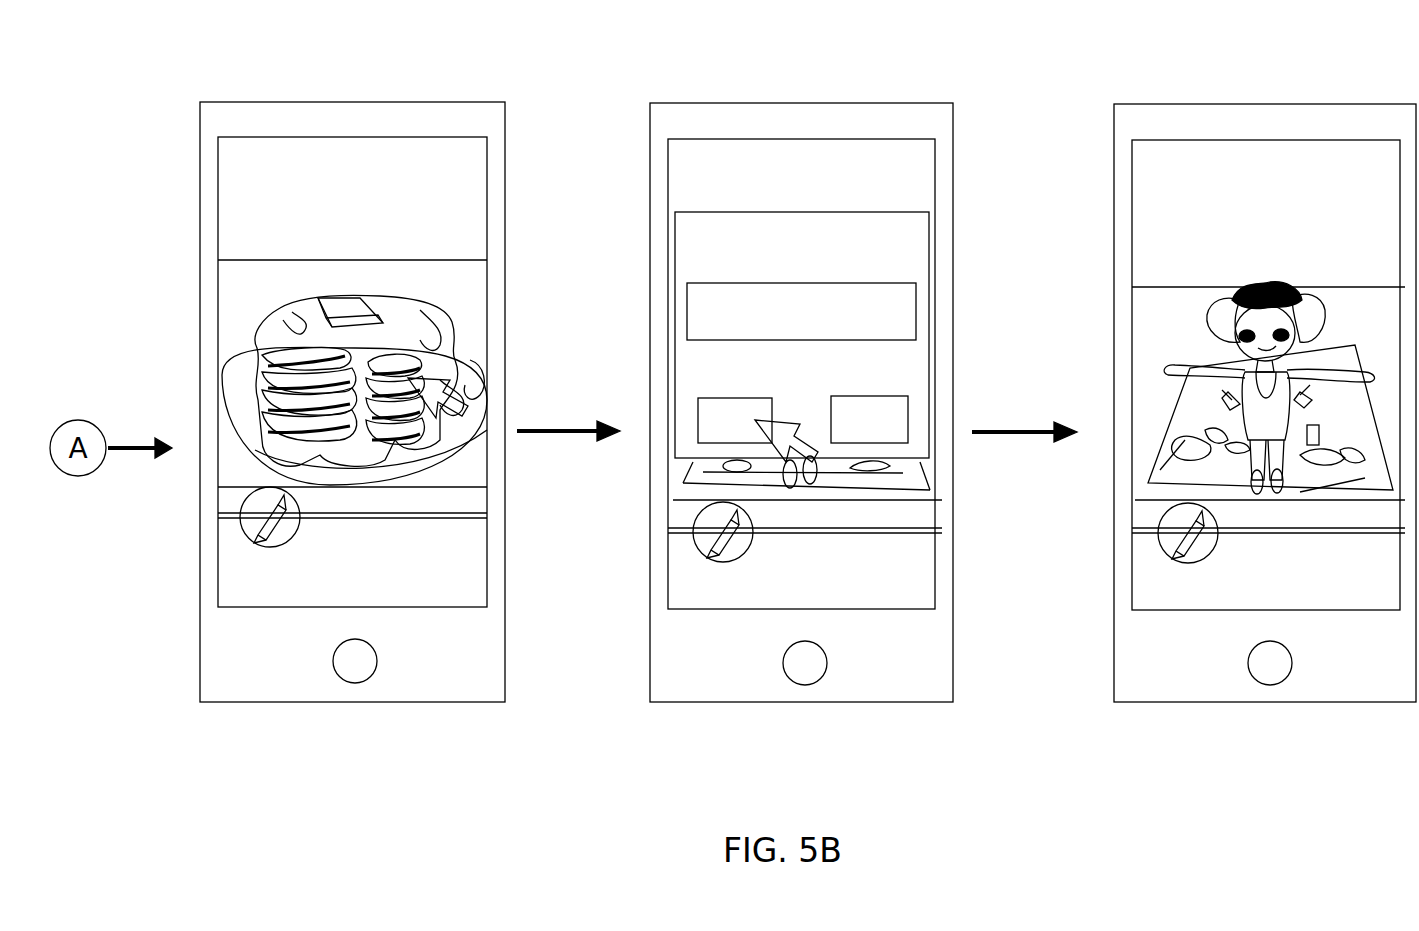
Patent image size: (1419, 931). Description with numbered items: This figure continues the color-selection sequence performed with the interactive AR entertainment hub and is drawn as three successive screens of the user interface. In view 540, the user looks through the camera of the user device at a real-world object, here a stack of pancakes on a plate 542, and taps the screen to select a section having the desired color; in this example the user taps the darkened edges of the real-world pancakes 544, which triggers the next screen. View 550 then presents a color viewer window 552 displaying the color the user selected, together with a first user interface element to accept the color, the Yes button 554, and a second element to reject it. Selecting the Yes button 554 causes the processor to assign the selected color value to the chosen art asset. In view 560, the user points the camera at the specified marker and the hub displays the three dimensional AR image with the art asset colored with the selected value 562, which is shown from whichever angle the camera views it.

The view 540 is at (273, 82).
The stack of pancakes on a plate 542 is at (258, 328).
The darkened edges of the real-world pancakes 544 is at (468, 412).
The view 550 is at (703, 82).
The color viewer window 552 is at (692, 303).
The Yes button 554 is at (785, 416).
The view 560 is at (1153, 82).
The selected value 562 is at (1222, 278).